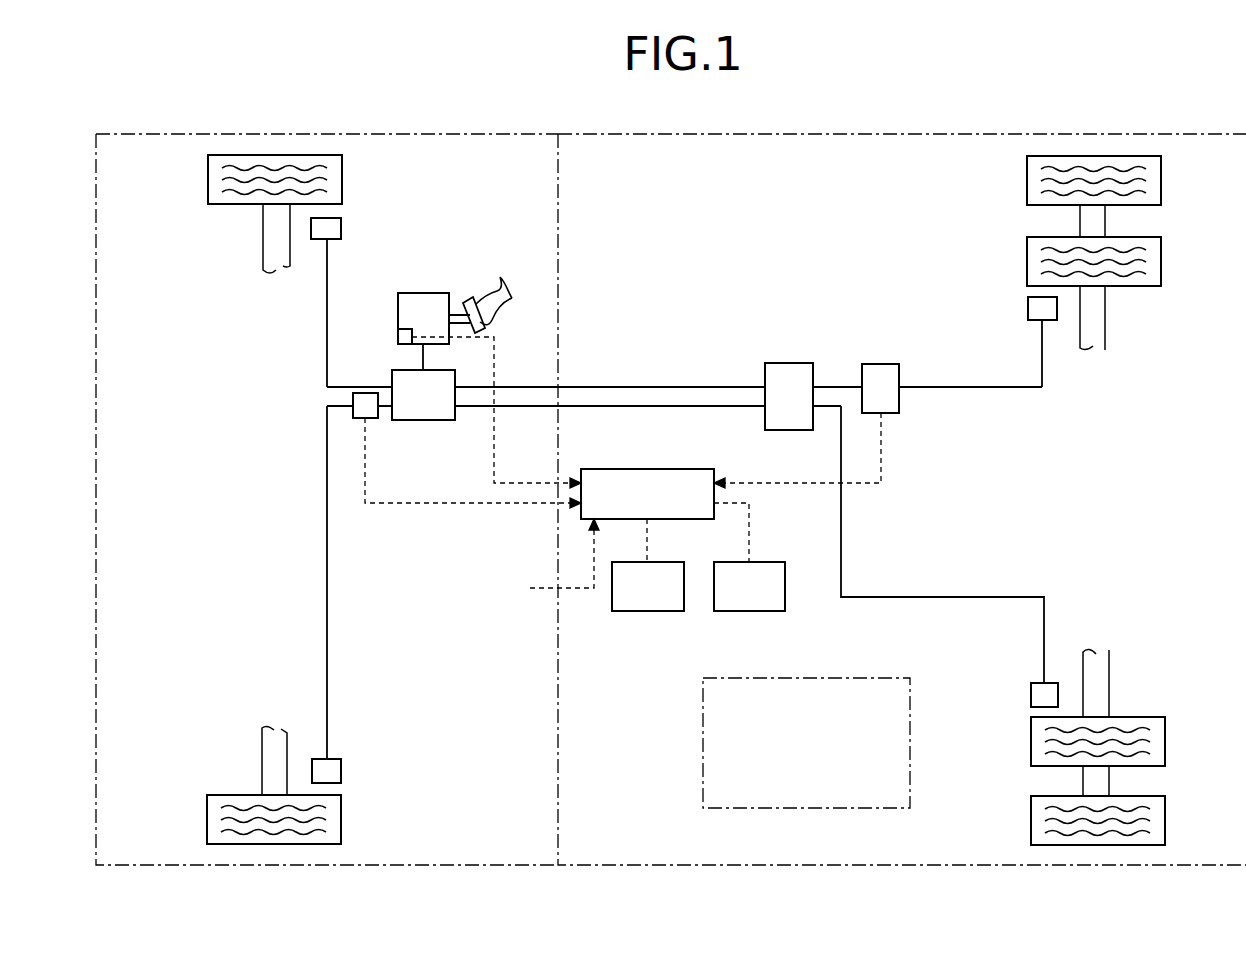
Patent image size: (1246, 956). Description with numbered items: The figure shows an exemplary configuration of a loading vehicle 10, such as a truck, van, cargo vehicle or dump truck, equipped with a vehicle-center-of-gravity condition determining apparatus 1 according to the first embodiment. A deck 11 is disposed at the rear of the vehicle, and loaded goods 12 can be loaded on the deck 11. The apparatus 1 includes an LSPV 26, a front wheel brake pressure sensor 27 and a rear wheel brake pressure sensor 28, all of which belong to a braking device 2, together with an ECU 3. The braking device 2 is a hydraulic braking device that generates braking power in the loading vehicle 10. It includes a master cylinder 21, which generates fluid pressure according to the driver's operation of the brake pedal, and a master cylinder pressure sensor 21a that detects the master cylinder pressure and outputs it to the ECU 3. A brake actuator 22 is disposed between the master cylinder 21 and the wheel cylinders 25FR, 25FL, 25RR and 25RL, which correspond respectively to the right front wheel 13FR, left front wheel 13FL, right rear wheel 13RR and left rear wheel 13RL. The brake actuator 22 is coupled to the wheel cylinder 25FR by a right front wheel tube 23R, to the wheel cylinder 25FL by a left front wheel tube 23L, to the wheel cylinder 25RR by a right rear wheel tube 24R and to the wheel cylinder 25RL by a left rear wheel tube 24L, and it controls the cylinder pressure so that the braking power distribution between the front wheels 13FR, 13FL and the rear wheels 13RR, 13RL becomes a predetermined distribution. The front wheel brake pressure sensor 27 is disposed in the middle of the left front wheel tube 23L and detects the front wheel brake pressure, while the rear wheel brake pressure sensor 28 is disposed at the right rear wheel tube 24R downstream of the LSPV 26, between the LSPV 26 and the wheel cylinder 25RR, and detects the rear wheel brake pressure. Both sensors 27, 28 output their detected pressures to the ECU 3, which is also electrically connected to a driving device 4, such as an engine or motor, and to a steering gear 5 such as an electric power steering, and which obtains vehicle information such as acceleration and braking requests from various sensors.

The vehicle-center-of-gravity condition determining apparatus 1 is at (633, 213).
The braking device 2 is at (466, 196).
The ECU 3 is at (610, 469).
The driving device 4 is at (660, 562).
The steering gear 5 is at (755, 562).
The loading vehicle 10 is at (232, 134).
The deck 11 is at (723, 153).
The loaded goods 12 is at (720, 678).
The right front wheel 13FR is at (343, 173).
The left front wheel 13FL is at (343, 813).
The right rear wheel 13RR is at (1162, 173).
The left rear wheel 13RL is at (1165, 815).
The master cylinder 21 is at (430, 293).
The master cylinder pressure sensor 21a is at (396, 339).
The brake actuator 22 is at (426, 421).
The right front wheel tube 23R is at (330, 256).
The left front wheel tube 23L is at (330, 531).
The right rear wheel tube 24R is at (730, 386).
The left rear wheel tube 24L is at (742, 408).
The wheel cylinder 25FR is at (343, 230).
The wheel cylinder 25FL is at (343, 770).
The wheel cylinder 25RR is at (1027, 310).
The wheel cylinder 25RL is at (1030, 696).
The LSPV 26 is at (790, 364).
The front wheel brake pressure sensor 27 is at (351, 400).
The rear wheel brake pressure sensor 28 is at (885, 365).